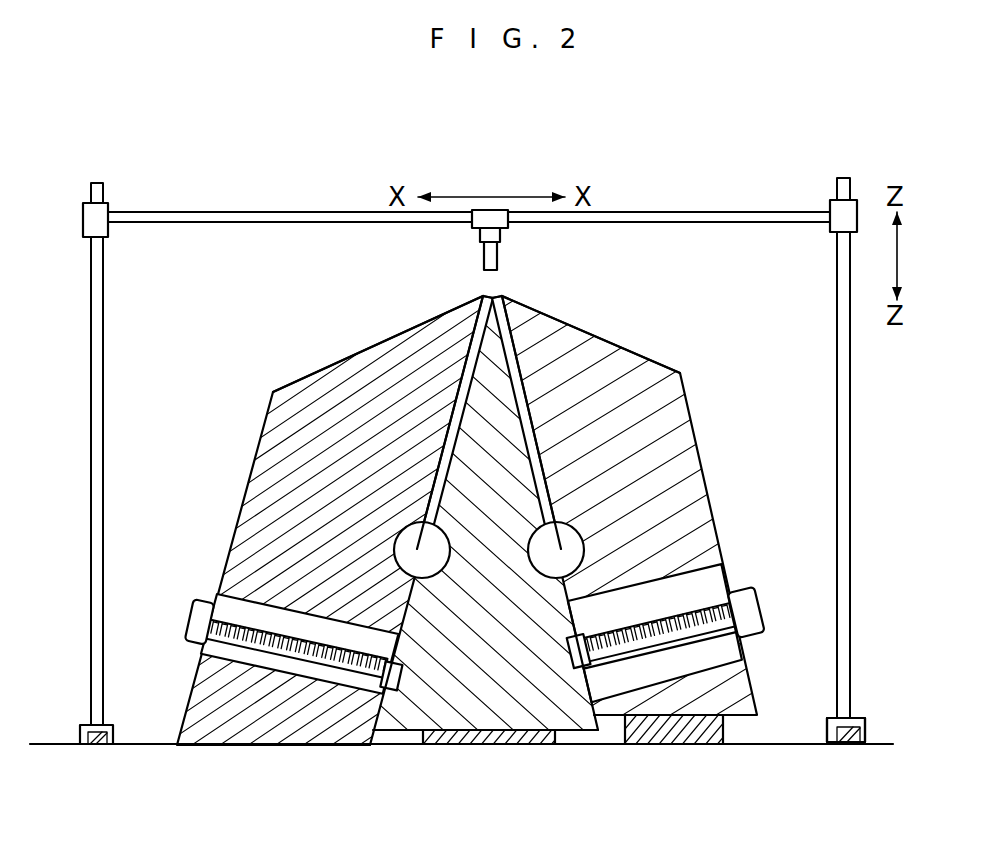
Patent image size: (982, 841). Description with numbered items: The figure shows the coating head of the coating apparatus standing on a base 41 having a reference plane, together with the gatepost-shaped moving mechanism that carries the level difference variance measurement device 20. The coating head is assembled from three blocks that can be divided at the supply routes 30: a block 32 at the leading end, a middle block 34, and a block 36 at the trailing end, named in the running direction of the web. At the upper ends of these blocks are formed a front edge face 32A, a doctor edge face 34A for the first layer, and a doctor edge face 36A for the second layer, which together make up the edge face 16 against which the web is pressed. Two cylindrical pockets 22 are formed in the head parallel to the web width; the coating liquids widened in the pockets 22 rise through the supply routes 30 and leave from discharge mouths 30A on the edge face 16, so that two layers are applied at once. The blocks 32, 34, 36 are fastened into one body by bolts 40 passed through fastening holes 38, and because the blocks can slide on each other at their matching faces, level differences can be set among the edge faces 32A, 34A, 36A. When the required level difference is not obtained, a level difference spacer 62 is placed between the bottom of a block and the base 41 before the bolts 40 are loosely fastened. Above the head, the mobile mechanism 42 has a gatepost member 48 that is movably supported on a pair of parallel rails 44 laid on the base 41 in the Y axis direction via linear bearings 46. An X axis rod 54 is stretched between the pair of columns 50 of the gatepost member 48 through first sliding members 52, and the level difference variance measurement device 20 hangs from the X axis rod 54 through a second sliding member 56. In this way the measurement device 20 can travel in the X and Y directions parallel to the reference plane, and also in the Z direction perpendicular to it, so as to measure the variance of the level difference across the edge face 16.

The edge face 16 is at (507, 280).
The level difference variance measurement device 20 is at (486, 260).
The cylindrical pockets 22 is at (405, 546).
The supply routes 30 is at (445, 463).
The discharge mouths 30A is at (505, 332).
The block at the leading end 32 is at (267, 542).
The front edge face 32A is at (325, 367).
The middle block 34 is at (486, 700).
The doctor edge face for a first layer 34A is at (490, 300).
The block at the trailing end 36 is at (655, 430).
The doctor edge face for a second layer 36A is at (637, 348).
The fastening holes 38 is at (222, 663).
The bolts 40 is at (203, 634).
The base 41 is at (885, 742).
The mobile mechanism 42 is at (763, 200).
The rails 44 is at (97, 750).
The linear bearings 46 is at (833, 718).
The gatepost member 48 is at (689, 210).
The columns 50 is at (104, 418).
The first sliding members 52 is at (98, 228).
The X axis rod 54 is at (275, 225).
The second sliding member 56 is at (492, 210).
The level difference spacer 62 is at (527, 737).